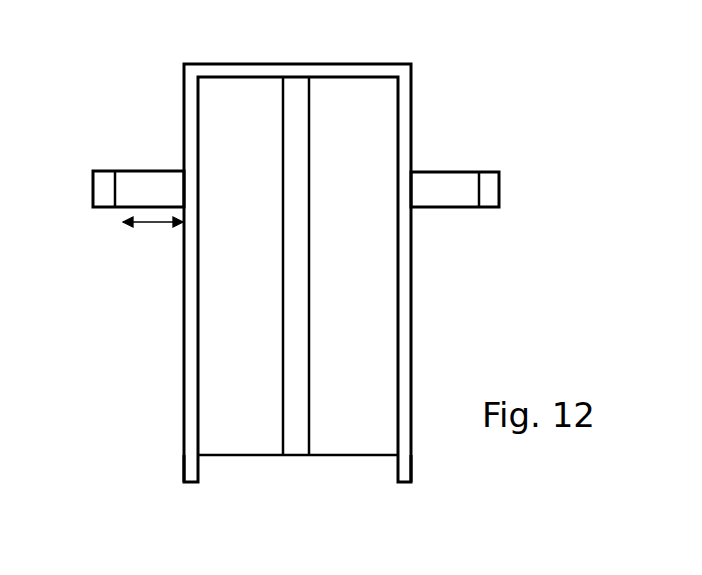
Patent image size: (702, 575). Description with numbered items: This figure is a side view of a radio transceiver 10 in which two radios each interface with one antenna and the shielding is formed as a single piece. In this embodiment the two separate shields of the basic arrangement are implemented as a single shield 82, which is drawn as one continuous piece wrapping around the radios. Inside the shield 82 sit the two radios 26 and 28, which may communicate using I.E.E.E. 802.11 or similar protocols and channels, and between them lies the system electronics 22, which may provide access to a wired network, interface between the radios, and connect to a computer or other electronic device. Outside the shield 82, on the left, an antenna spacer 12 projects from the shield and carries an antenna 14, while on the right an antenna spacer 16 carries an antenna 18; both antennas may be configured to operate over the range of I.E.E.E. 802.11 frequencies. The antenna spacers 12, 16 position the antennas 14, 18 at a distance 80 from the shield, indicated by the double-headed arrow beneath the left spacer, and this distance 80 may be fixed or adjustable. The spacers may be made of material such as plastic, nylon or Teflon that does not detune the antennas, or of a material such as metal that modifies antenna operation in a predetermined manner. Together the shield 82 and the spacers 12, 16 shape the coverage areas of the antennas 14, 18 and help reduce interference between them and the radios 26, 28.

The radio transceiver 10 is at (311, 32).
The antenna spacer 12 is at (157, 170).
The antenna 14 is at (93, 190).
The antenna spacer 16 is at (445, 172).
The antenna 18 is at (500, 197).
The system electronics 22 is at (300, 456).
The radio 26 is at (245, 456).
The radio 28 is at (357, 456).
The distance 80 is at (155, 227).
The single shield 82 is at (182, 478).